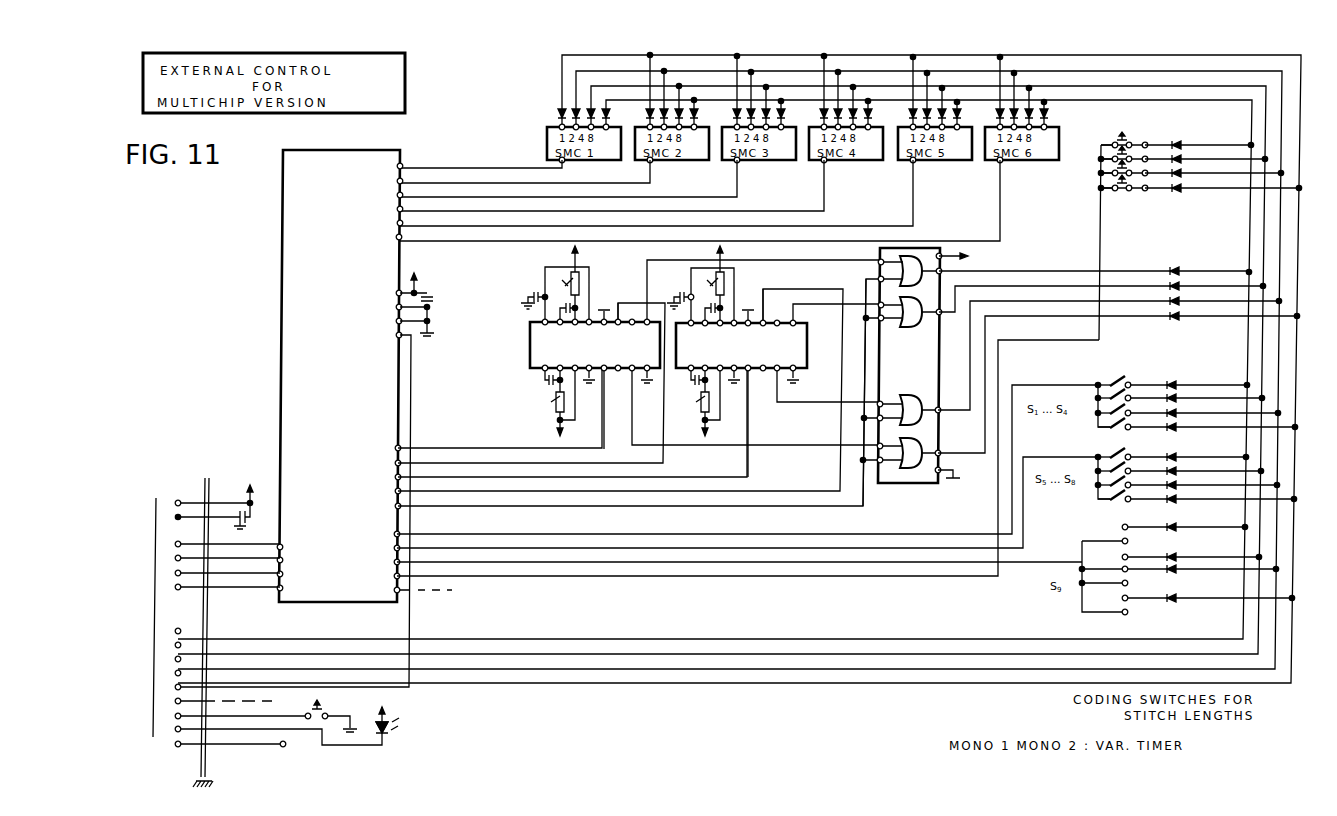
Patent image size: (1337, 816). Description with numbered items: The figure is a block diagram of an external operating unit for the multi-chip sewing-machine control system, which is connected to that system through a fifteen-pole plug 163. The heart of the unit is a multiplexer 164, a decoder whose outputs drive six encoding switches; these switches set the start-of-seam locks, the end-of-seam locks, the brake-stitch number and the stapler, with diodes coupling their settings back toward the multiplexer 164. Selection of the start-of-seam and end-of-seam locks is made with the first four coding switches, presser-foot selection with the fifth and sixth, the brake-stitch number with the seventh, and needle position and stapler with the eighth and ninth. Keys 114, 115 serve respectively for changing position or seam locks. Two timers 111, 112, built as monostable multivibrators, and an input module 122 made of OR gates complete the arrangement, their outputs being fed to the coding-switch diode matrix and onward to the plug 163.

The timer 111 is at (530, 360).
The timer 112 is at (804, 356).
The key 114 is at (1107, 236).
The key 115 is at (1133, 178).
The input module 122 is at (906, 485).
The 15-pole plug 163 is at (202, 488).
The multiplexer 164 is at (283, 372).